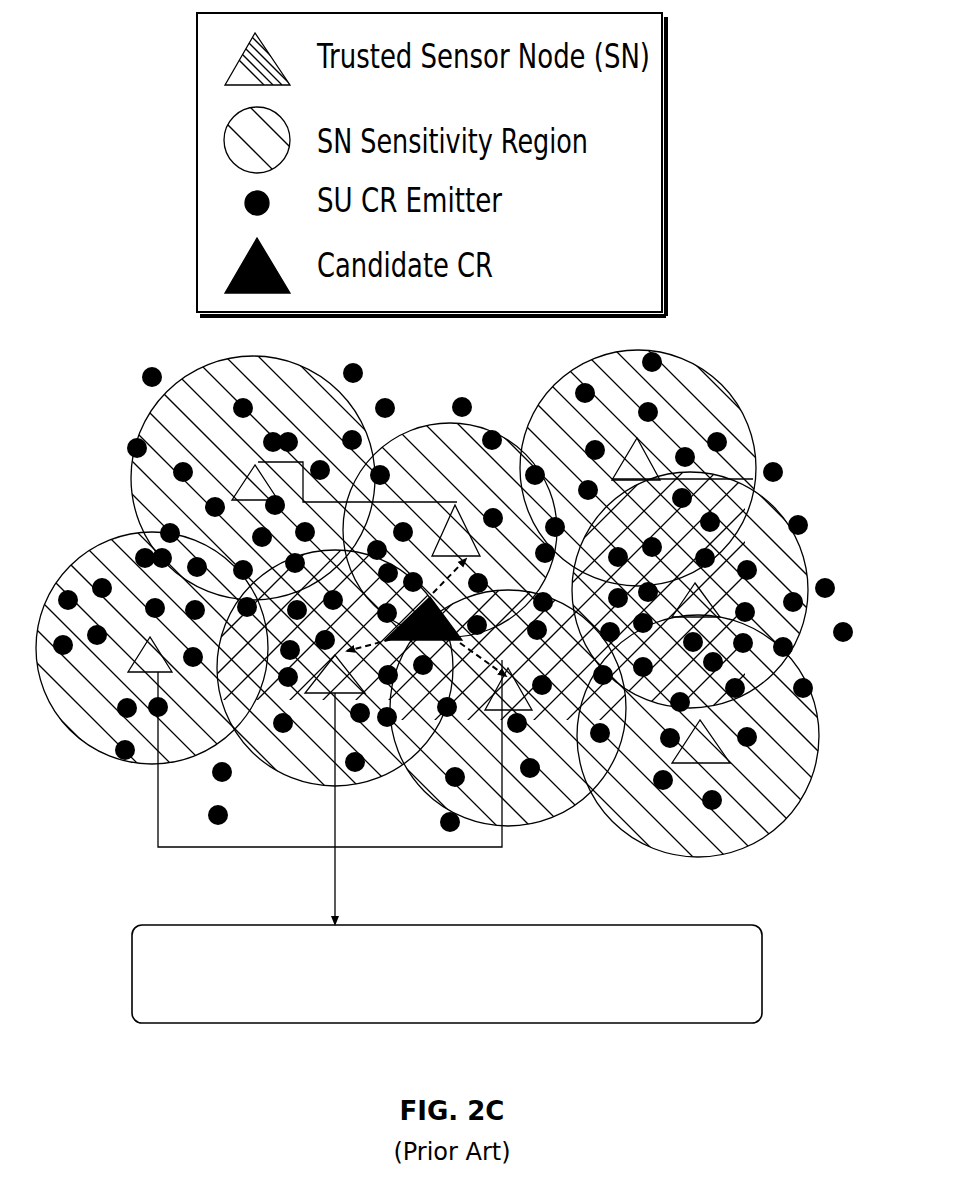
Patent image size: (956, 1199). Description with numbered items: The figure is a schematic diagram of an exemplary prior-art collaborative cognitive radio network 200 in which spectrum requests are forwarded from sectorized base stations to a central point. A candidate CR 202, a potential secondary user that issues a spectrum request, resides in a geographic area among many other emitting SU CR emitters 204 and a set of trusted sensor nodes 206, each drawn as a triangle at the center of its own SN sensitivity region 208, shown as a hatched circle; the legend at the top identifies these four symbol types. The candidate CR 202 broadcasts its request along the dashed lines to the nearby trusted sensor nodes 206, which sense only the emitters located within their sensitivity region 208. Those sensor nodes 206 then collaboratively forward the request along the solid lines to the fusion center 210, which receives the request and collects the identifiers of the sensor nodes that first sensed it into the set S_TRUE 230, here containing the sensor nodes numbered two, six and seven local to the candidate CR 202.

The collaborative cognitive radio network 200 is at (132, 332).
The candidate CR 202 is at (230, 268).
The SU CR emitter 204 is at (245, 200).
The trusted sensor node 206 is at (230, 68).
The SN sensitivity region 208 is at (222, 140).
The fusion center 210 is at (130, 980).
The set S_TRUE 230 is at (563, 956).